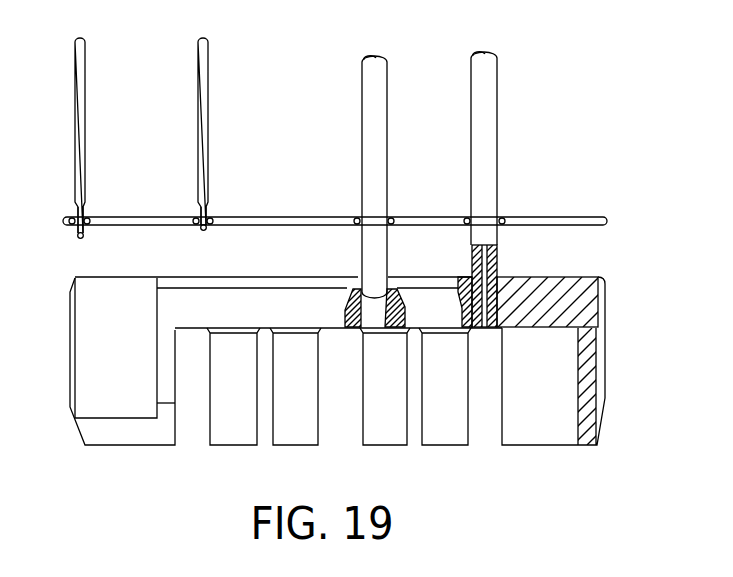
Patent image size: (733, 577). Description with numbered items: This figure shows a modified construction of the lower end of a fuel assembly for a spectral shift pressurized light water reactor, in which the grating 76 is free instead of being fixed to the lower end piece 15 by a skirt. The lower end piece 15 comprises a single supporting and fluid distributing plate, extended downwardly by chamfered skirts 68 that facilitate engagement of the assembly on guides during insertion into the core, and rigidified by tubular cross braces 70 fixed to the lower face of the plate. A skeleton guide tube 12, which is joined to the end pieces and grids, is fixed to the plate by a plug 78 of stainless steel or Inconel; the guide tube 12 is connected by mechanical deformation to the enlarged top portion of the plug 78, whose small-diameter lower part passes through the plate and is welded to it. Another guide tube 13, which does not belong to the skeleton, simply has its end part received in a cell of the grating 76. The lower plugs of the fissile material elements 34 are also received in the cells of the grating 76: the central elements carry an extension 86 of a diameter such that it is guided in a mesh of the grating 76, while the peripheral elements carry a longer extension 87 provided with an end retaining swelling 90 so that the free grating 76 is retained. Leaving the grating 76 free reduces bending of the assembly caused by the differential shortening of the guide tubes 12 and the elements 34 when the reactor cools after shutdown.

The fissile material elements 34 is at (198, 135).
The extension 87 is at (78, 213).
The extension 86 is at (208, 202).
The end retaining swelling 90 is at (78, 238).
The grating 76 is at (283, 216).
The guide tube 13 is at (367, 152).
The guide tube 12 is at (493, 137).
The plug 78 is at (497, 252).
The lower end piece 15 is at (178, 313).
The tubular cross braces 70 is at (380, 428).
The chamfered skirts 68 is at (587, 407).